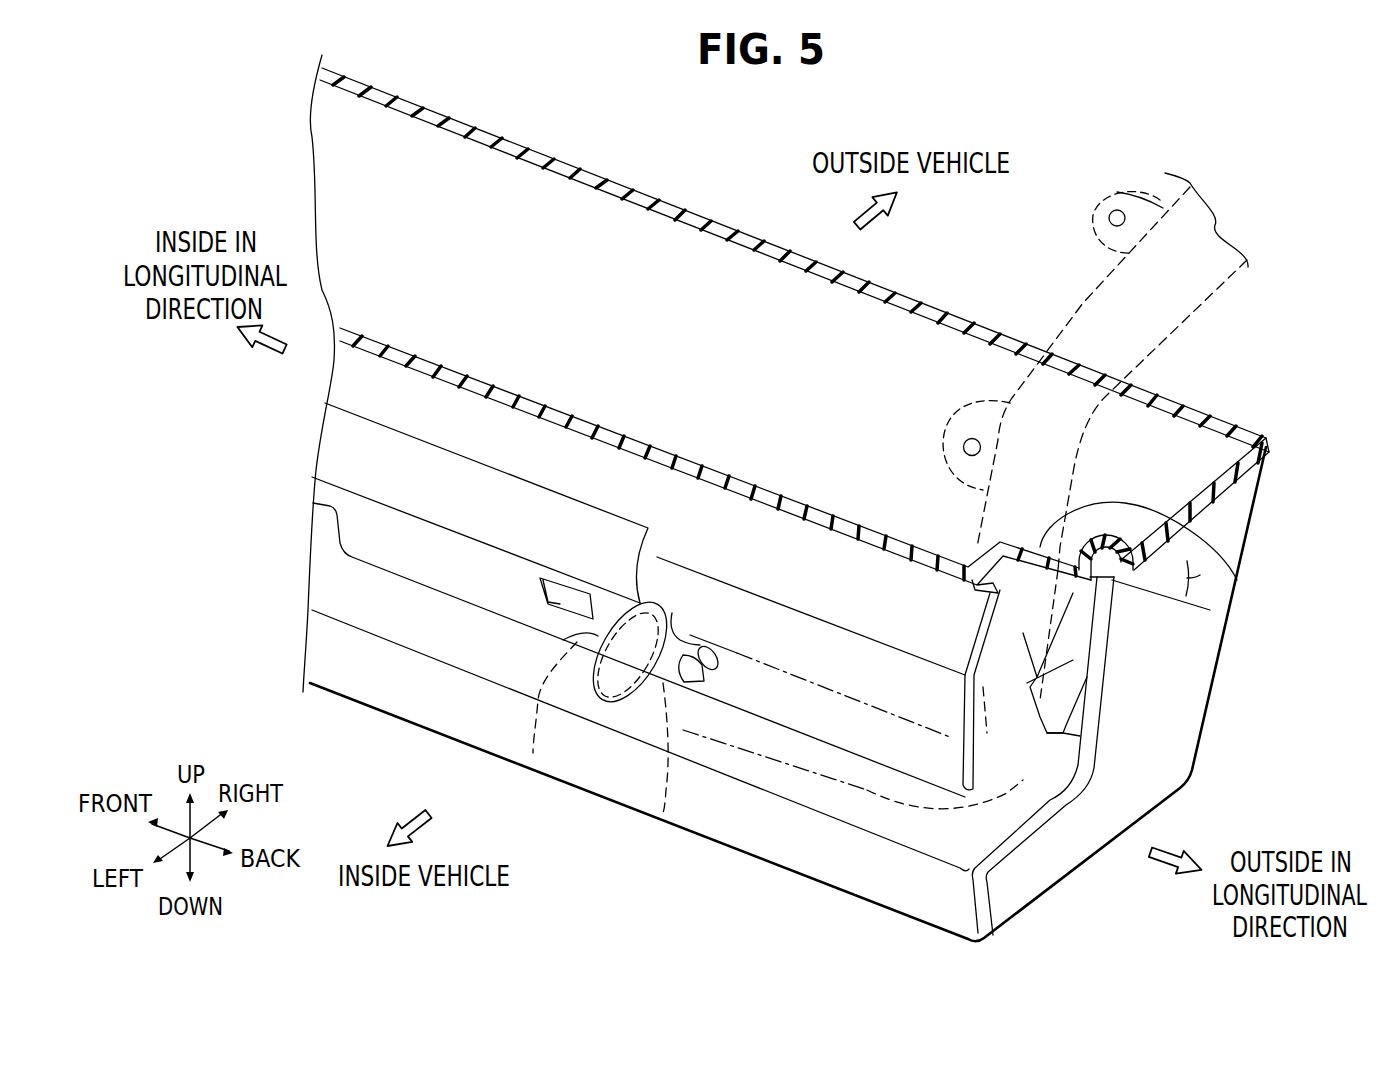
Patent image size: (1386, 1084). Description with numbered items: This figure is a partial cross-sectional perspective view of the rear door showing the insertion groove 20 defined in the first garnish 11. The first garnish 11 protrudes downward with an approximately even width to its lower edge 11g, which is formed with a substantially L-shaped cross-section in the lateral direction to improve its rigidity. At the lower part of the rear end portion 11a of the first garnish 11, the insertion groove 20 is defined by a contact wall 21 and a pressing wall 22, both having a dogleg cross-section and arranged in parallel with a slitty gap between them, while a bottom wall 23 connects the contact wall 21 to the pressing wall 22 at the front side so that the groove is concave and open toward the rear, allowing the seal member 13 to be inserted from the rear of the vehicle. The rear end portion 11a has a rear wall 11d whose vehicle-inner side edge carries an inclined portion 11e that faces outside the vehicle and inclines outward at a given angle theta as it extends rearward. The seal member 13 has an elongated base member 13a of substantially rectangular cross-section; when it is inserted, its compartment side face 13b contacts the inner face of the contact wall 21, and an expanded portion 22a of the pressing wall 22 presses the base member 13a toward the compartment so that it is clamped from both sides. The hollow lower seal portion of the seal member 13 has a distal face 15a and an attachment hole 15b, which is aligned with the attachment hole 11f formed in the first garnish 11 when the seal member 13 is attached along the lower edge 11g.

The first garnish 11 is at (1270, 418).
The rear end portion 11a is at (1250, 497).
The rear wall 11d is at (1113, 663).
The inclined portion 11e is at (1080, 736).
The attachment hole 11f is at (672, 613).
The lower edge 11g is at (765, 866).
The seal member 13 is at (1064, 254).
The base member 13a is at (1010, 607).
The compartment side face 13b is at (913, 567).
The distal face 15a is at (533, 753).
The attachment hole 15b is at (663, 813).
The insertion groove 20 is at (1166, 731).
The contact wall 21 is at (1067, 600).
The pressing wall 22 is at (1112, 580).
The expanded portion 22a is at (1080, 673).
The bottom wall 23 is at (1030, 547).